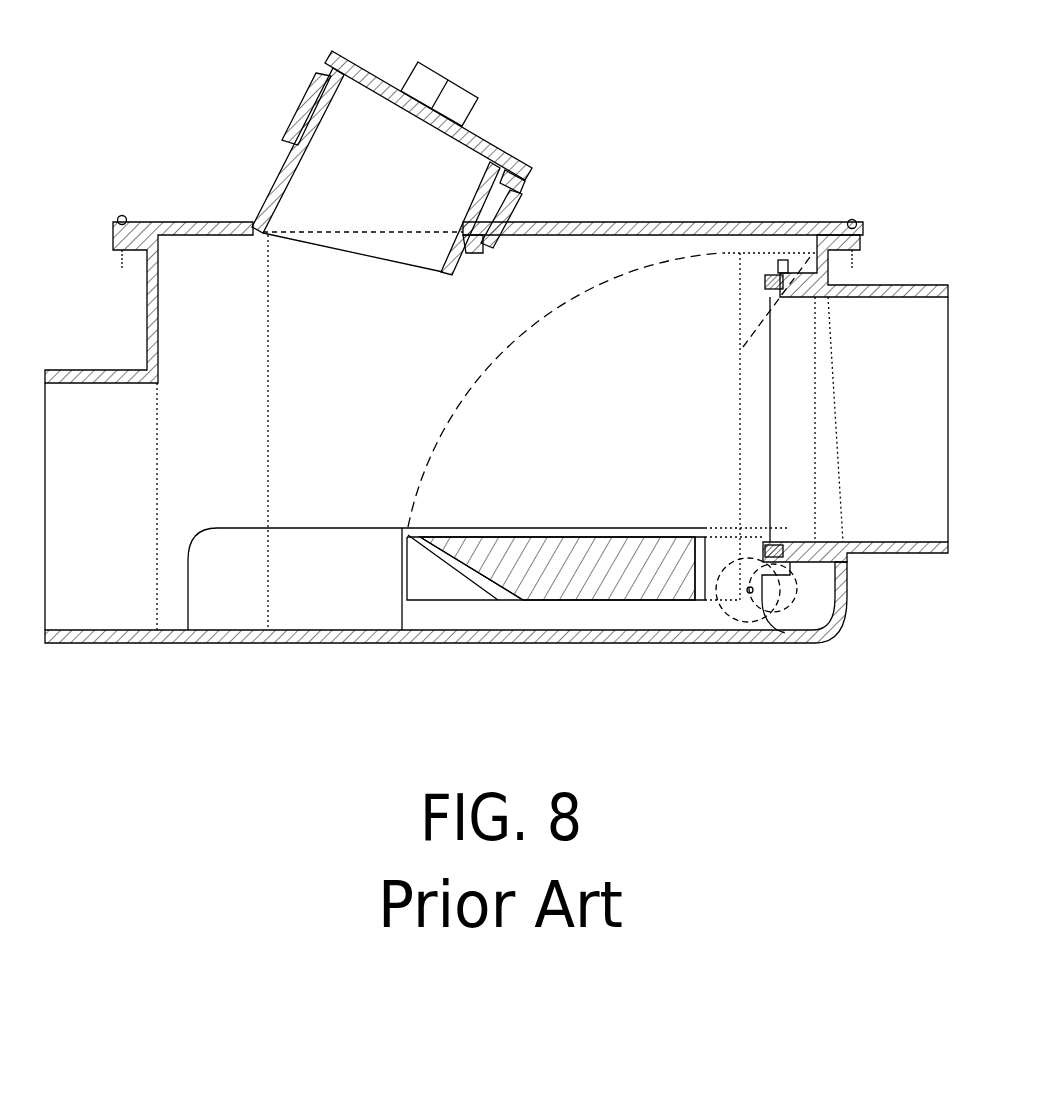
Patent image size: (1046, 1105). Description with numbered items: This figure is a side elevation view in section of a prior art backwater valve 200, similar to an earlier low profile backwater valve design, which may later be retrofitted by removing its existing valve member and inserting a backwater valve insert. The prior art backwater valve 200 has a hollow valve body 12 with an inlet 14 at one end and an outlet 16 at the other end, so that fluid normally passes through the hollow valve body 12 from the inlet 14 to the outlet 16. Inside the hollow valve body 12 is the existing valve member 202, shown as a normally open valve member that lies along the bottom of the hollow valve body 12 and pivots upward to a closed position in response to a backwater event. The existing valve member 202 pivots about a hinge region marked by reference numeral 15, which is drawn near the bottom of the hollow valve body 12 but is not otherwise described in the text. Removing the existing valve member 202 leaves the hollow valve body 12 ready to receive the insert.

The prior art backwater valve 200 is at (504, 359).
The hollow valve body 12 is at (783, 223).
The inlet 14 is at (900, 555).
The hinge pin 15 is at (785, 633).
The outlet 16 is at (115, 635).
The existing valve member 202 is at (647, 588).